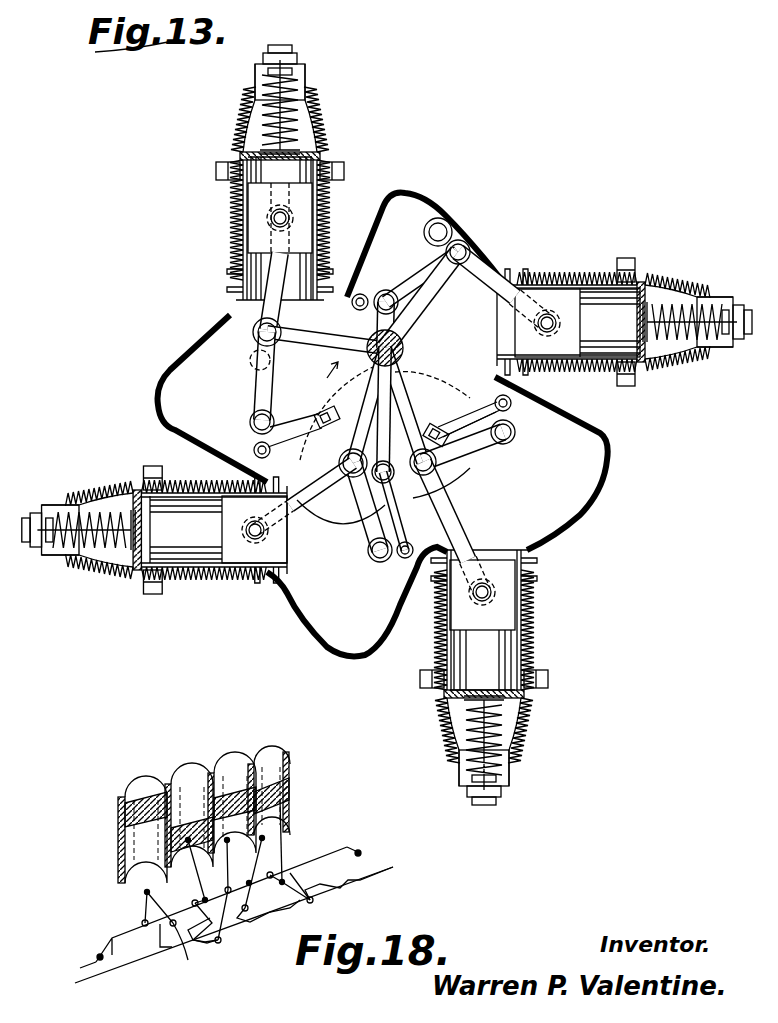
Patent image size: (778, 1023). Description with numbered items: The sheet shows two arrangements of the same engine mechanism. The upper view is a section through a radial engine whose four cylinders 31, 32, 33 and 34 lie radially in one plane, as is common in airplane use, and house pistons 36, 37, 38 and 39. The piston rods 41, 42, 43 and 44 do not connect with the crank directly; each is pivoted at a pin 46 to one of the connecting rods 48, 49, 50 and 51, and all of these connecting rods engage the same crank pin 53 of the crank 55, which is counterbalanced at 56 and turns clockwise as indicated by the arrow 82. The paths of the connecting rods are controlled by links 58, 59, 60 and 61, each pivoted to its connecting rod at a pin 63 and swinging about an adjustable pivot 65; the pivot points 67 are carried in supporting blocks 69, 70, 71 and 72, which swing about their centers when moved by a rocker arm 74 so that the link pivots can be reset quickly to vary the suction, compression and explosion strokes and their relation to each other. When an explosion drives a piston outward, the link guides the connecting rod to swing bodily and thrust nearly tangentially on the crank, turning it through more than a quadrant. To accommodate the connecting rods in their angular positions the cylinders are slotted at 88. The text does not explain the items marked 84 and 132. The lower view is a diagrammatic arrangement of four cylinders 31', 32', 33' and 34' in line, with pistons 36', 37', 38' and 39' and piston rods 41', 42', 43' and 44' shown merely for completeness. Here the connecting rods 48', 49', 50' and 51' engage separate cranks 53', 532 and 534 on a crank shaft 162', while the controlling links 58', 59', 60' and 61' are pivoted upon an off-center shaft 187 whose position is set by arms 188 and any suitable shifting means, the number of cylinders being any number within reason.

In FIG. 13, the cylinder 31 is at (289, 172).
In FIG. 13, the cylinder 32 is at (624, 330).
In FIG. 13, the cylinder 33 is at (496, 677).
In FIG. 13, the cylinder 34 is at (154, 538).
In FIG. 13, the piston 36 is at (280, 228).
In FIG. 13, the piston 37 is at (577, 322).
In FIG. 13, the piston 38 is at (482, 625).
In FIG. 13, the piston 39 is at (218, 528).
In FIG. 13, the piston rod 41 is at (291, 256).
In FIG. 13, the piston rod 42 is at (505, 285).
In FIG. 13, the piston rod 43 is at (481, 521).
In FIG. 13, the piston rod 44 is at (318, 500).
In FIG. 13, the pin 46 is at (251, 358).
In FIG. 13, the connecting rod 48 is at (326, 352).
In FIG. 13, the connecting rod 49 is at (421, 300).
In FIG. 13, the connecting rod 50 is at (449, 414).
In FIG. 13, the connecting rod 51 is at (359, 410).
In FIG. 13, the crank pin 53 is at (408, 345).
In FIG. 13, the crank 55 is at (404, 382).
In FIG. 13, the counterbalance 56 is at (442, 491).
In FIG. 13, the link 58 is at (239, 376).
In FIG. 13, the link 59 is at (422, 274).
In FIG. 13, the link 60 is at (476, 451).
In FIG. 13, the link 61 is at (352, 509).
In FIG. 13, the pin 63 is at (258, 332).
In FIG. 13, the adjustable pivot 65 is at (386, 291).
In FIG. 13, the pivot point 67 is at (358, 294).
In FIG. 13, the block 69 is at (282, 441).
In FIG. 13, the block 70 is at (372, 320).
In FIG. 13, the block 71 is at (474, 421).
In FIG. 13, the block 72 is at (404, 522).
In FIG. 13, the rocker arm 74 is at (352, 294).
In FIG. 13, the arrow 82 is at (337, 379).
In FIG. 13, the stud 84 is at (243, 285).
In FIG. 13, the slot 88 is at (234, 312).
In FIG. 13, the cam path 132 is at (448, 387).
In FIG. 18, the cylinder 31' is at (124, 829).
In FIG. 18, the cylinder 32' is at (189, 797).
In FIG. 18, the cylinder 33' is at (232, 782).
In FIG. 18, the cylinder 34' is at (283, 779).
In FIG. 18, the piston 36' is at (143, 782).
In FIG. 18, the piston 37' is at (192, 814).
In FIG. 18, the piston 38' is at (234, 797).
In FIG. 18, the piston 39' is at (288, 785).
In FIG. 18, the piston rod 41' is at (127, 901).
In FIG. 18, the piston rod 42' is at (185, 870).
In FIG. 18, the piston rod 43' is at (214, 889).
In FIG. 18, the piston rod 44' is at (258, 872).
In FIG. 18, the connecting rod 48' is at (197, 941).
In FIG. 18, the connecting rod 49' is at (225, 925).
In FIG. 18, the connecting rod 50' is at (259, 896).
In FIG. 18, the connecting rod 51' is at (298, 882).
In FIG. 18, the crank 53' is at (222, 937).
In FIG. 18, the crank 532 is at (221, 945).
In FIG. 18, the crank 534 is at (332, 893).
In FIG. 18, the controlling link 58' is at (139, 919).
In FIG. 18, the controlling link 59' is at (181, 897).
In FIG. 18, the controlling link 60' is at (250, 875).
In FIG. 18, the controlling link 61' is at (296, 842).
In FIG. 18, the crank shaft 162' is at (234, 936).
In FIG. 18, the off-center shaft 187 is at (118, 936).
In FIG. 18, the arm 188 is at (98, 955).